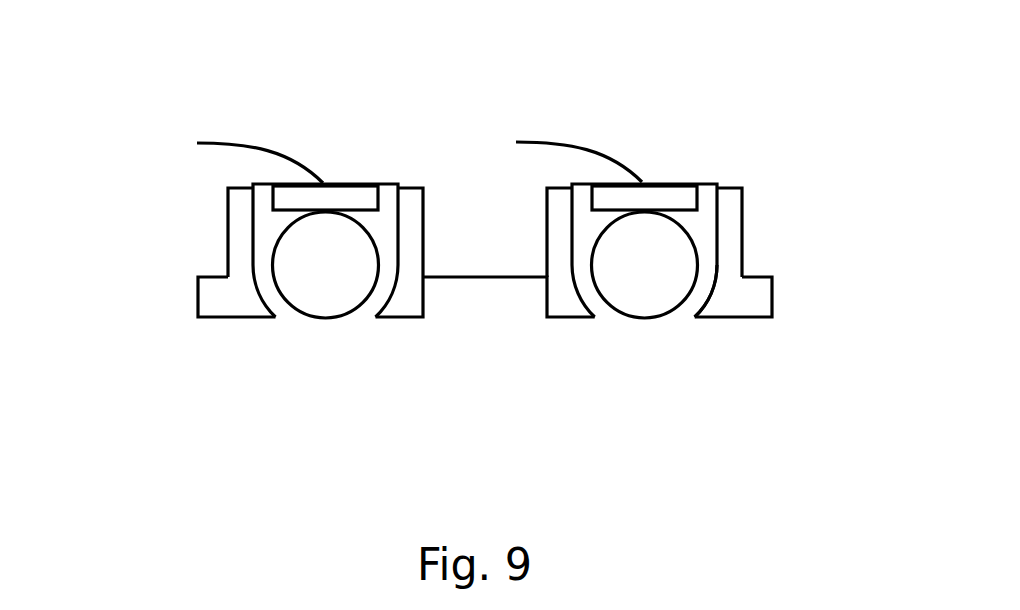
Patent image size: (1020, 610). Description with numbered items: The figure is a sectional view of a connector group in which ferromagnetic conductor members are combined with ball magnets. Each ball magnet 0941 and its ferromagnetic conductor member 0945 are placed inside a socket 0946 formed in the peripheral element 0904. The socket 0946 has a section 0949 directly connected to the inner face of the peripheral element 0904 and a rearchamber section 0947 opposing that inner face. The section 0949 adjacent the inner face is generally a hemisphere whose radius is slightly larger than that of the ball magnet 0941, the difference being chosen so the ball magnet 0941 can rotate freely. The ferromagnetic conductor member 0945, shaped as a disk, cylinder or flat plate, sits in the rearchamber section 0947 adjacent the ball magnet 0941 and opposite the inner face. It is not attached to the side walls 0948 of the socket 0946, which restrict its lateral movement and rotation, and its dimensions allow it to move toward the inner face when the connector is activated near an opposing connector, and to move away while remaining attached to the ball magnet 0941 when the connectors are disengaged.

The peripheral element 0904 is at (243, 299).
The ball magnet 0941 is at (330, 298).
The ferromagnetic conductor member 0945 is at (332, 197).
The socket 0946 is at (272, 300).
The rearchamber section 0947 is at (693, 220).
The side walls 0948 is at (238, 207).
The socket section 0949 is at (689, 305).